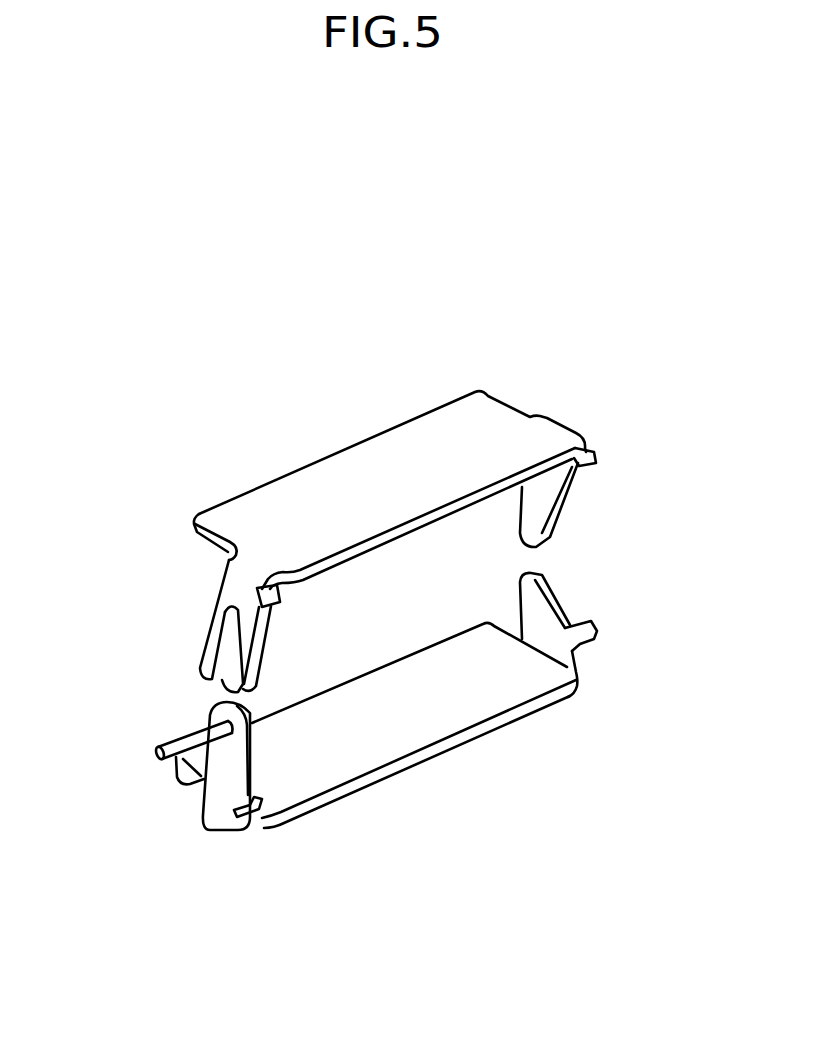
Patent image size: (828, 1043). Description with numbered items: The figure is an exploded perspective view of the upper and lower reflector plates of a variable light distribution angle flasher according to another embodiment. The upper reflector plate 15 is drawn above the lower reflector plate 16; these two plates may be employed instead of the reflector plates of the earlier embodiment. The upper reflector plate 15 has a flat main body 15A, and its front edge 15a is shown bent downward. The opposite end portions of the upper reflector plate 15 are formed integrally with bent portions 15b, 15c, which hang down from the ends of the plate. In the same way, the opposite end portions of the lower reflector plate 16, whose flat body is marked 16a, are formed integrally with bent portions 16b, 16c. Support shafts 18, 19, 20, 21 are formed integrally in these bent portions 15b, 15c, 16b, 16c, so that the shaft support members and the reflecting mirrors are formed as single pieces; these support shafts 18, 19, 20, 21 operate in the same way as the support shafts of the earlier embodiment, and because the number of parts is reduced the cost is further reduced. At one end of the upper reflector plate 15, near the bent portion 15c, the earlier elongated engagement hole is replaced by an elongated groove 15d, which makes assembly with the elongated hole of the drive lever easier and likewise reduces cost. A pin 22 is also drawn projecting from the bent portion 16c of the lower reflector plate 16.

The upper reflector plate 15 is at (322, 432).
The upper plate body 15A is at (410, 450).
The bent front edge 15a is at (400, 540).
The bent portion 15b is at (540, 512).
The bent portion 15c is at (232, 575).
The elongated groove 15d is at (228, 690).
The support shaft 18 is at (593, 452).
The support shaft 19 is at (262, 615).
The lower reflector plate 16 is at (540, 712).
The lower plate body 16a is at (455, 698).
The bent portion 16b is at (533, 593).
The bent portion 16c is at (228, 763).
The support shaft 20 is at (590, 638).
The support shaft 21 is at (252, 822).
The pin 22 is at (192, 778).